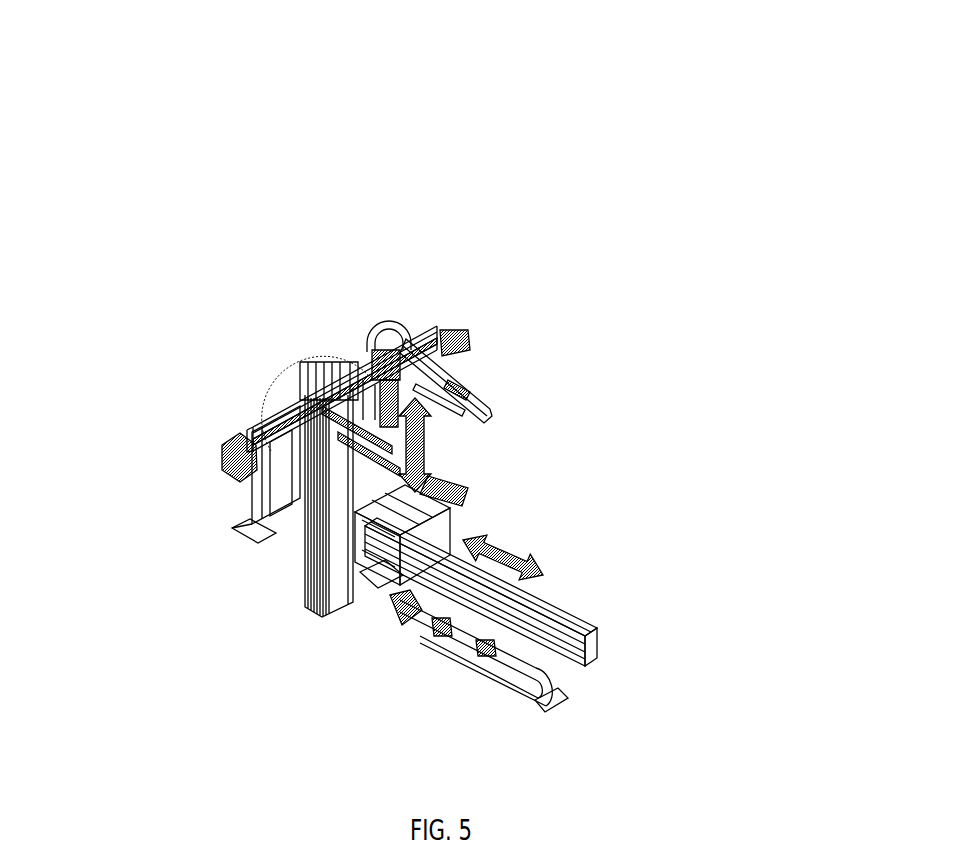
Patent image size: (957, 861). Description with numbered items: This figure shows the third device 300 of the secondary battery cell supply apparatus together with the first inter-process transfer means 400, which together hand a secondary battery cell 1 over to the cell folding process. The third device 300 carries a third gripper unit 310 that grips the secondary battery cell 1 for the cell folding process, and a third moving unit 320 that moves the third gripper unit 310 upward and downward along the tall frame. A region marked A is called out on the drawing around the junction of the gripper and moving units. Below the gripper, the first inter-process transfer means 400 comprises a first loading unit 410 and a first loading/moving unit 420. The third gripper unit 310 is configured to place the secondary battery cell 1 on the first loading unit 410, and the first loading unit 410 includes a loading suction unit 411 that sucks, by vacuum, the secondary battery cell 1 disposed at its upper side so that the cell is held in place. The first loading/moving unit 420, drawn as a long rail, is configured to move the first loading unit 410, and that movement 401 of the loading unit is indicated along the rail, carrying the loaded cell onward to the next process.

The secondary battery cell 1 is at (487, 418).
The third device 300 is at (360, 312).
The third gripper unit 310 is at (462, 364).
The third moving unit 320 is at (222, 425).
The detail region A is at (282, 372).
The first inter-process transfer means 400 is at (567, 563).
The first loading unit 410 is at (492, 486).
The loading suction unit 411 is at (452, 478).
The first loading/moving unit 420 is at (594, 598).
The movement of the first loading unit 401 is at (490, 572).